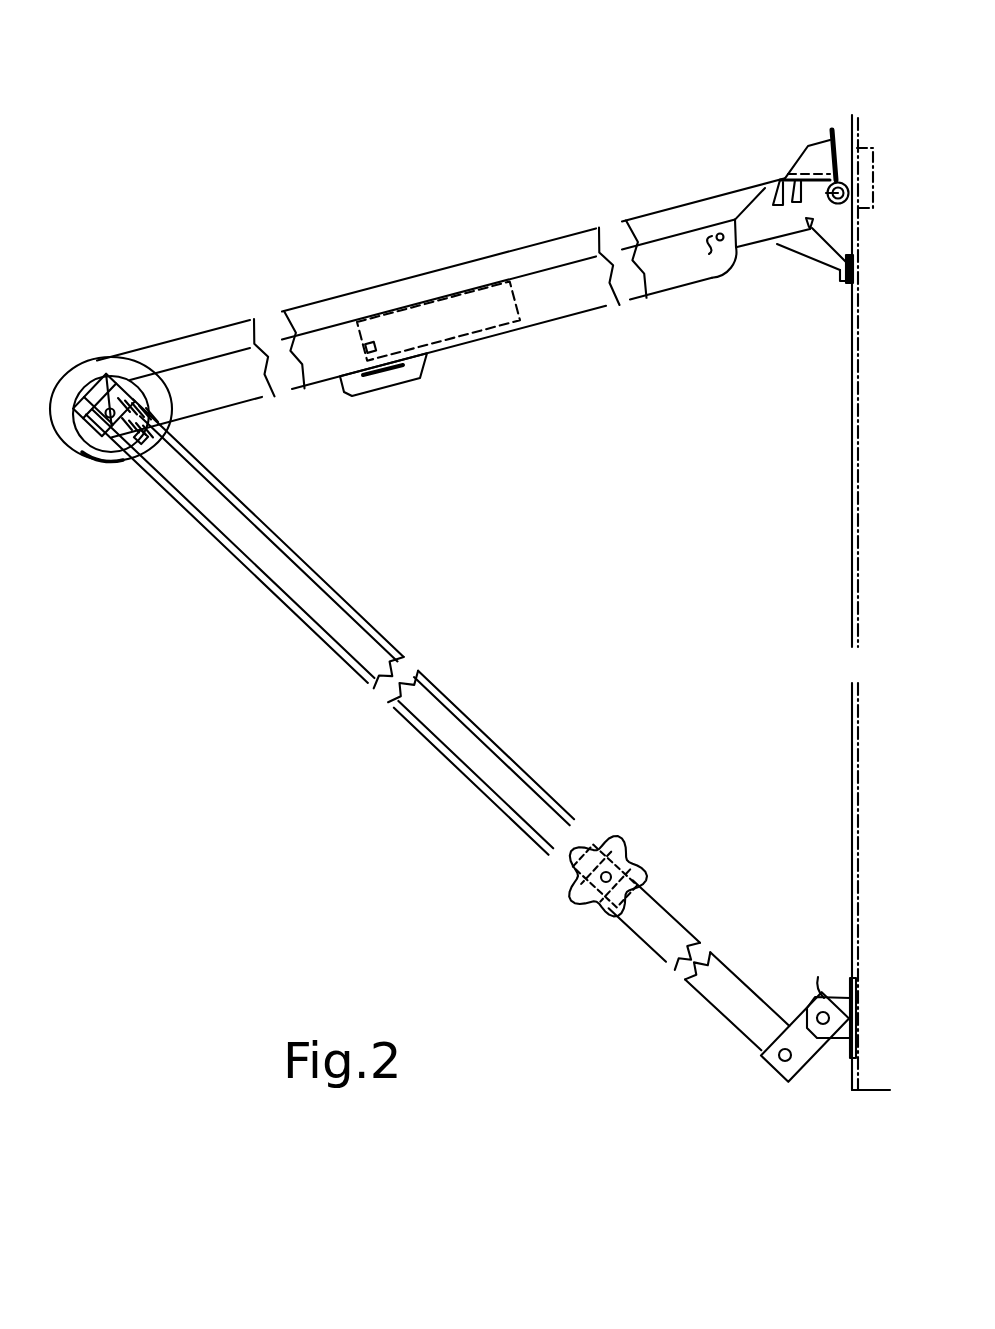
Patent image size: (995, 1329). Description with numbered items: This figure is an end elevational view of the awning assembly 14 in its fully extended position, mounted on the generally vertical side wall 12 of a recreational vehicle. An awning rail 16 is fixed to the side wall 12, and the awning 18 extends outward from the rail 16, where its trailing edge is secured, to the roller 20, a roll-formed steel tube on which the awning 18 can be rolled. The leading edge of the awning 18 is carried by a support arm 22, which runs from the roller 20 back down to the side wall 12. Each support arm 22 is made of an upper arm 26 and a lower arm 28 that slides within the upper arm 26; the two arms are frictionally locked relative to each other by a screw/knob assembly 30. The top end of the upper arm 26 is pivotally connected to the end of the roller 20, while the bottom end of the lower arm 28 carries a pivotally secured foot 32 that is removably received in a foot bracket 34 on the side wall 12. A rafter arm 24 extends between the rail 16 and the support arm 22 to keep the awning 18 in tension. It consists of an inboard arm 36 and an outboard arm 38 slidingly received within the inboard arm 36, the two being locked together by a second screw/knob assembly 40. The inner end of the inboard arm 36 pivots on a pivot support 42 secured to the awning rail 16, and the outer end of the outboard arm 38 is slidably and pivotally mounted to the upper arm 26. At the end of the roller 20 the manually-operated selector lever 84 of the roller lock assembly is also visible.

The side wall 12 is at (855, 552).
The awning assembly 14 is at (230, 232).
The awning rail 16 is at (847, 128).
The awning 18 is at (368, 289).
The roller 20 is at (56, 455).
The support arms 22 is at (316, 658).
The rafter arms 24 is at (557, 345).
The upper arm 26 is at (243, 571).
The lower arm 28 is at (640, 937).
The screw/knob assembly 30 is at (638, 851).
The foot 32 is at (815, 1052).
The foot bracket 34 is at (843, 1040).
The inboard arm 36 is at (599, 312).
The outboard arm 38 is at (245, 403).
The screw/knob assembly 40 is at (410, 368).
The pivot support 42 is at (771, 248).
The selector lever 84 is at (110, 465).